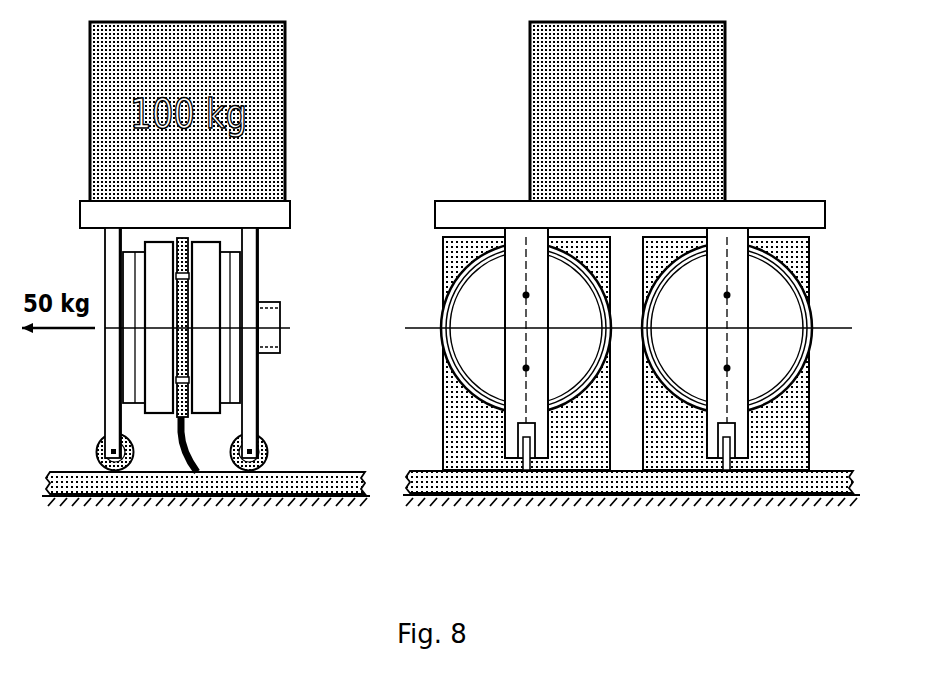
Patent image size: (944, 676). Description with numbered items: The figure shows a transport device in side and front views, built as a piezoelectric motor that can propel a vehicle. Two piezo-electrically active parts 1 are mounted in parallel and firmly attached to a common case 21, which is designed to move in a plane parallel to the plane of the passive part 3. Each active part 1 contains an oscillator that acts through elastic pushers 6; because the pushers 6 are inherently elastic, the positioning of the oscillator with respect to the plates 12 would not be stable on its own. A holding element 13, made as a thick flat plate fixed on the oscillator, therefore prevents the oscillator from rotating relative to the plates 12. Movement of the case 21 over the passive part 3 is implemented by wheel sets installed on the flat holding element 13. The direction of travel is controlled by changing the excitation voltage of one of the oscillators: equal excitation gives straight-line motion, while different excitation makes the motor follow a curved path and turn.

The piezo-electrically active part 1 is at (207, 299).
The passive part 3 is at (210, 508).
The pusher 6 is at (185, 454).
The plate 12 is at (115, 484).
The holding element 13 is at (118, 409).
The common case 21 is at (270, 217).